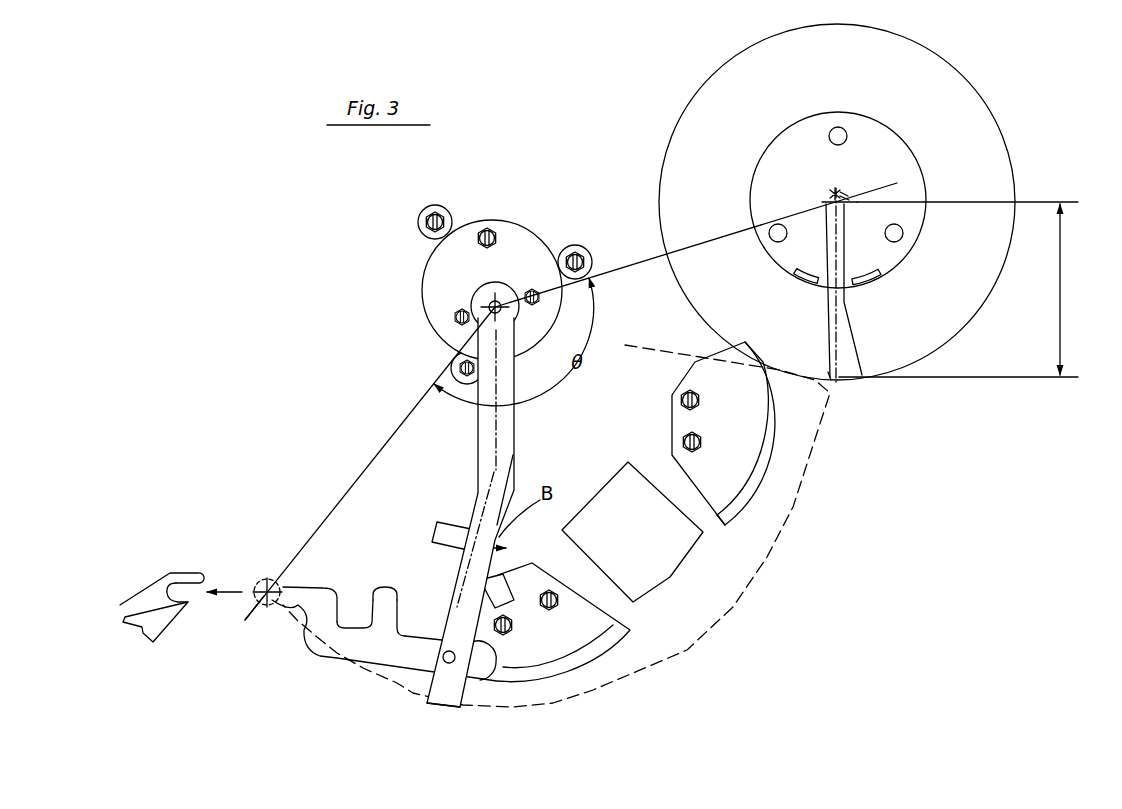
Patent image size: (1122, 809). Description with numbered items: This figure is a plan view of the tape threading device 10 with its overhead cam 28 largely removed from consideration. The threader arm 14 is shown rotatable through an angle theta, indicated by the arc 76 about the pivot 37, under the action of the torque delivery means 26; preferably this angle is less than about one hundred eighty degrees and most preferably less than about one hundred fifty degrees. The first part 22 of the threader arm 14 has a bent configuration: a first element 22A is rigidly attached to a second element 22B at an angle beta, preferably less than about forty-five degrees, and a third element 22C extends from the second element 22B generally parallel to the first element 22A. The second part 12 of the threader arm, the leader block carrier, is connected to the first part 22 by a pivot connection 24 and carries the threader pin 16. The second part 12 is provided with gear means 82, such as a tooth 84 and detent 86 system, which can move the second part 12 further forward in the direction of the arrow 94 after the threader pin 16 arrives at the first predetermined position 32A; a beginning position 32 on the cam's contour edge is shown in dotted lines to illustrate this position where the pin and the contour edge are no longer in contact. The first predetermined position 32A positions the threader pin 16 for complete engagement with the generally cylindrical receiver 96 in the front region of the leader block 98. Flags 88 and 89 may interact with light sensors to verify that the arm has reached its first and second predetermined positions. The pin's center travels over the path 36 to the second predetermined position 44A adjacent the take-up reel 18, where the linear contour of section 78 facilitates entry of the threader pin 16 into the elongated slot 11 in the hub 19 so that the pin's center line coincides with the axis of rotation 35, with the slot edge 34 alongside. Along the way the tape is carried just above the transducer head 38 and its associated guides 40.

The tape threading device 10 is at (377, 362).
The slot 11 is at (846, 305).
The second part 12 is at (327, 664).
The threader arm 14 is at (526, 422).
The threader pin 16 is at (270, 607).
The take-up reel 18 is at (694, 87).
The hub 19 is at (804, 291).
The first part 22 is at (480, 425).
The first element 22A is at (524, 470).
The second element 22B is at (451, 563).
The third element 22C is at (462, 714).
The pivot connection 24 is at (448, 666).
The torque delivery means 26 is at (412, 268).
The overhead cam 28 is at (803, 418).
The beginning position 32 is at (282, 582).
The first predetermined position 32A is at (257, 598).
The slot edge 34 is at (846, 209).
The axis of rotation 35 is at (832, 193).
The path 36 is at (796, 511).
The hub pivot 37 is at (499, 293).
The transducer head 38 is at (632, 532).
The guides 40 is at (556, 622).
The second predetermined position 44A is at (826, 381).
The angle arc 76 is at (592, 333).
The section 78 is at (1061, 291).
The gear means 82 is at (387, 583).
The tooth 84 is at (405, 616).
The detent 86 is at (353, 611).
The flag 88 is at (448, 521).
The flag 89 is at (511, 582).
The arrow 94 is at (235, 585).
The receiver 96 is at (190, 590).
The leader block 98 is at (150, 593).